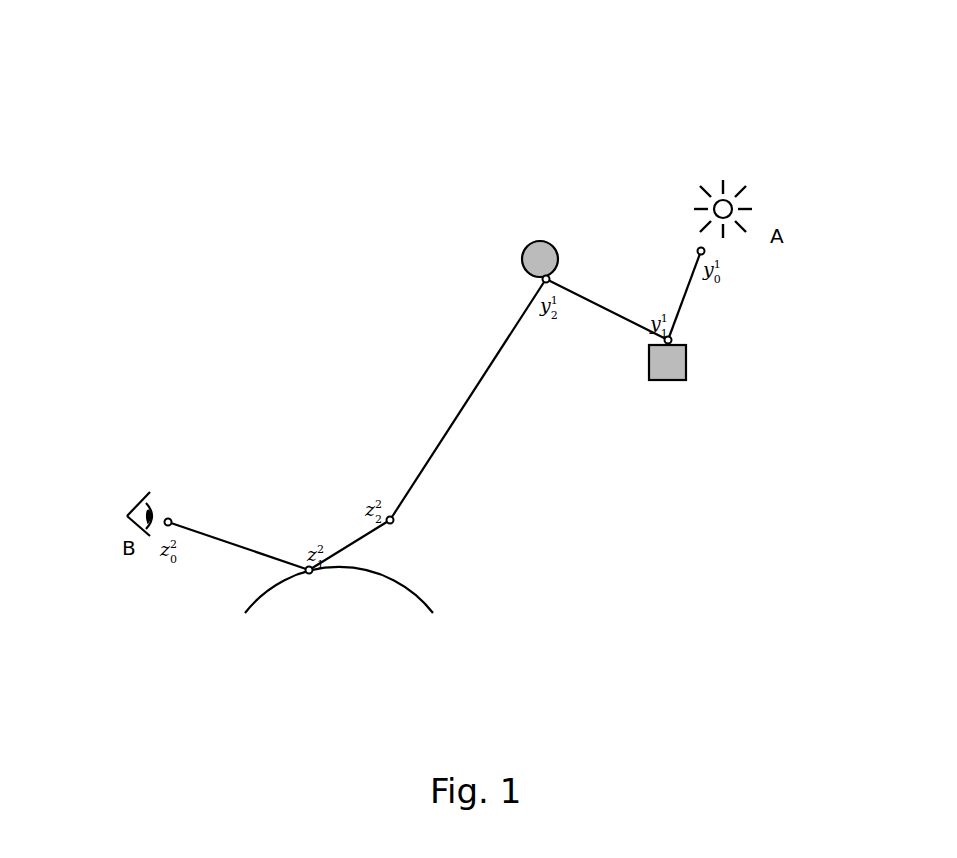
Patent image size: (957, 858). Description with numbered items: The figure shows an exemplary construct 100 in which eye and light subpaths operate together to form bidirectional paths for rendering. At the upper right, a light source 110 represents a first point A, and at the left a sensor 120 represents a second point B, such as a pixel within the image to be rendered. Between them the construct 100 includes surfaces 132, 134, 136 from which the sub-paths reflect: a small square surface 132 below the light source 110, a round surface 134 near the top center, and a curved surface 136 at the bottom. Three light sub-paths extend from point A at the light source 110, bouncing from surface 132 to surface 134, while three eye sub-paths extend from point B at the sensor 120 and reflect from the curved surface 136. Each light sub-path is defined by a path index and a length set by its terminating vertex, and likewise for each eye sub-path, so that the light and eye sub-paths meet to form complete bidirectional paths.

The construct 100 is at (707, 85).
The light source 110 is at (755, 200).
The sensor 120 is at (107, 514).
The surface 132 is at (697, 367).
The surface 134 is at (565, 263).
The surface 136 is at (339, 597).